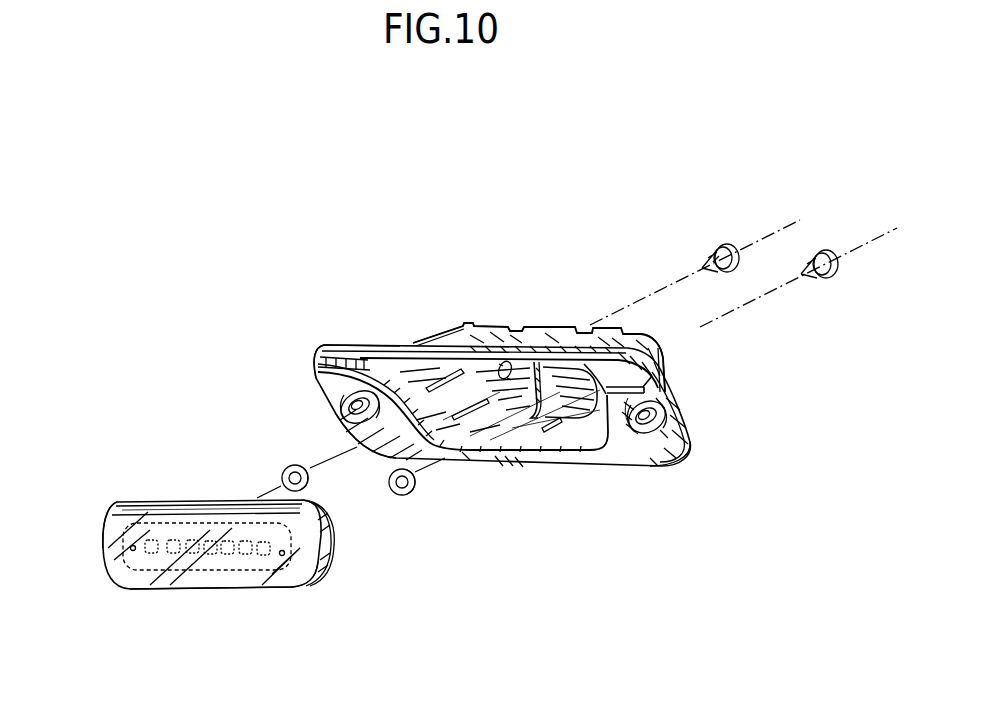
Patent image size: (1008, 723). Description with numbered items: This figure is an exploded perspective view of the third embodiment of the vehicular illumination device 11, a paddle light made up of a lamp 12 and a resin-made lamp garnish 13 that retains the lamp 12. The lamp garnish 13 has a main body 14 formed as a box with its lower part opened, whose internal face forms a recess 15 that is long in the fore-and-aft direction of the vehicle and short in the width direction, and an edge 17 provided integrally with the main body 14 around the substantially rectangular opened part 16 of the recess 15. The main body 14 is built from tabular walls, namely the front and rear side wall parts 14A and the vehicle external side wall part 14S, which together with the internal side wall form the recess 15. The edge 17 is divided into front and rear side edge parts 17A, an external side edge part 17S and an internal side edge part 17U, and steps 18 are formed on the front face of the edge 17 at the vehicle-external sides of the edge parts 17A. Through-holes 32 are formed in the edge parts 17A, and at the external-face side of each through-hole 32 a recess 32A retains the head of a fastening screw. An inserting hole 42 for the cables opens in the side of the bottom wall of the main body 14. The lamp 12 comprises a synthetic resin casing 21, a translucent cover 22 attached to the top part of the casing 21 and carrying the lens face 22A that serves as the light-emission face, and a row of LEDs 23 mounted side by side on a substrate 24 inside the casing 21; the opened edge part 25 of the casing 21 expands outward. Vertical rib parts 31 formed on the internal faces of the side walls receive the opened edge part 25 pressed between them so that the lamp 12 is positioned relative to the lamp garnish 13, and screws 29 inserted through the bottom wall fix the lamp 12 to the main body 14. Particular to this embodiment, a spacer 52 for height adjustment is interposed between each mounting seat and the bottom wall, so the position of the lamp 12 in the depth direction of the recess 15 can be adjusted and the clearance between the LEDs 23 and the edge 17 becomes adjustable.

The vehicular illumination device 11 is at (322, 198).
The lamp 12 is at (124, 472).
The lamp garnish 13 is at (556, 262).
The main body 14 is at (657, 372).
The front and rear side wall parts 14A is at (430, 336).
The vehicle external side wall part 14S is at (517, 328).
The recess 15 is at (360, 341).
The opened part 16 is at (560, 377).
The edge 17 is at (547, 470).
The front side edge part and rear side edge part 17A is at (357, 428).
The external side edge part 17S is at (467, 340).
The internal side edge part 17U is at (517, 452).
The steps 18 is at (318, 343).
The casing 21 is at (330, 550).
The translucent cover 22 is at (103, 553).
The lens face 22A is at (140, 562).
The LEDs 23 is at (235, 560).
The substrate 24 is at (250, 572).
The opened edge part 25 is at (315, 577).
The screw 29 is at (823, 252).
The rib parts 31 is at (473, 404).
The through-holes 32 is at (340, 402).
The recess 32A is at (663, 433).
The inserting hole 42 is at (553, 368).
The spacer 52 is at (281, 478).